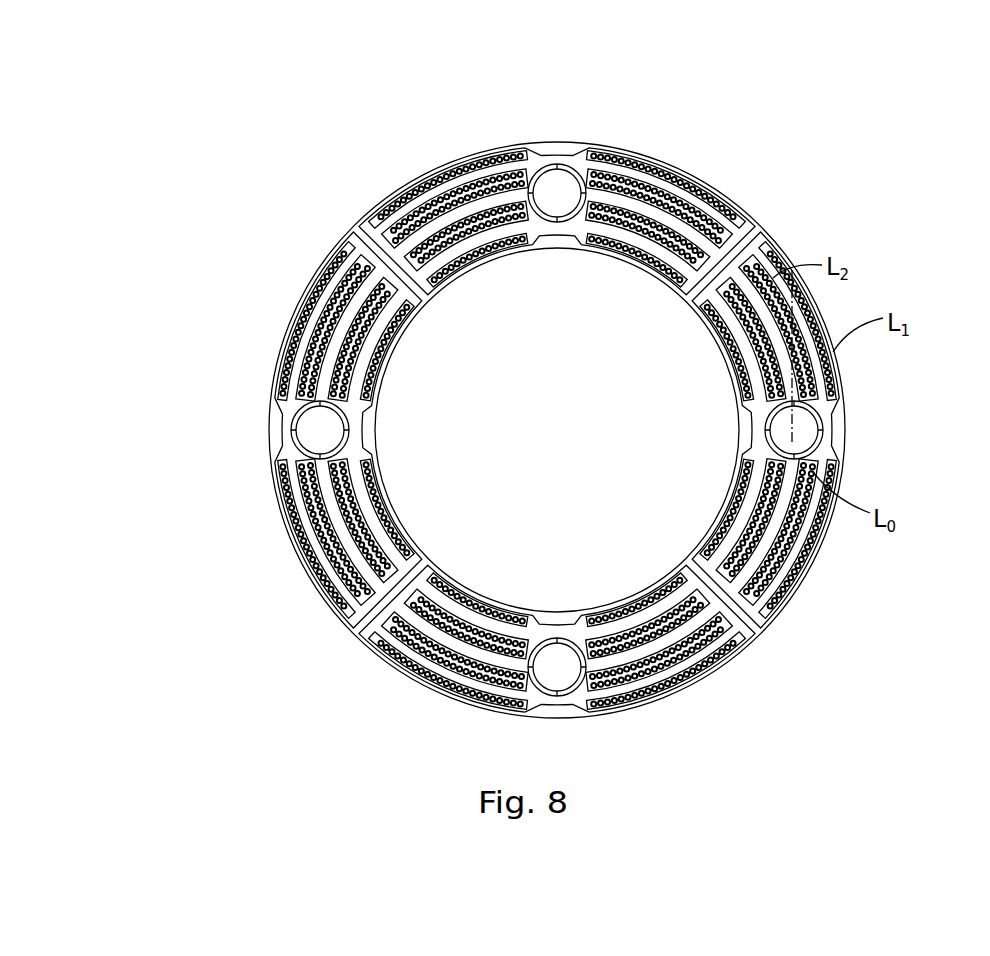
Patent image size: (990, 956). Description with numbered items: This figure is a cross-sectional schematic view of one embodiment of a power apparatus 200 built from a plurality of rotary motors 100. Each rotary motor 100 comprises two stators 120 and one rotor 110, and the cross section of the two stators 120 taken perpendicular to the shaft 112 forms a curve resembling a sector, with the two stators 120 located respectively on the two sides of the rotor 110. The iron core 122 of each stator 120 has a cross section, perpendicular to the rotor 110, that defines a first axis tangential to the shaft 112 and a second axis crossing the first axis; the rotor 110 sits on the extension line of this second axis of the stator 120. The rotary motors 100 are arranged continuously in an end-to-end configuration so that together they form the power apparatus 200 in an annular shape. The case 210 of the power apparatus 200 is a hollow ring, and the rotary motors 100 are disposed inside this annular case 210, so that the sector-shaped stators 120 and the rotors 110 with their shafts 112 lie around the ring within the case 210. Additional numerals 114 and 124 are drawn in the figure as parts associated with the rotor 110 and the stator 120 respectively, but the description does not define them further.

The power apparatus 200 is at (231, 196).
The case 210 is at (752, 212).
The rotary motor 100 is at (548, 421).
The rotor 110 is at (794, 430).
The shaft 112 is at (794, 430).
The hole rim 114 is at (794, 430).
The stator 120 is at (768, 539).
The iron core 122 is at (799, 539).
The strip frame 124 is at (798, 539).